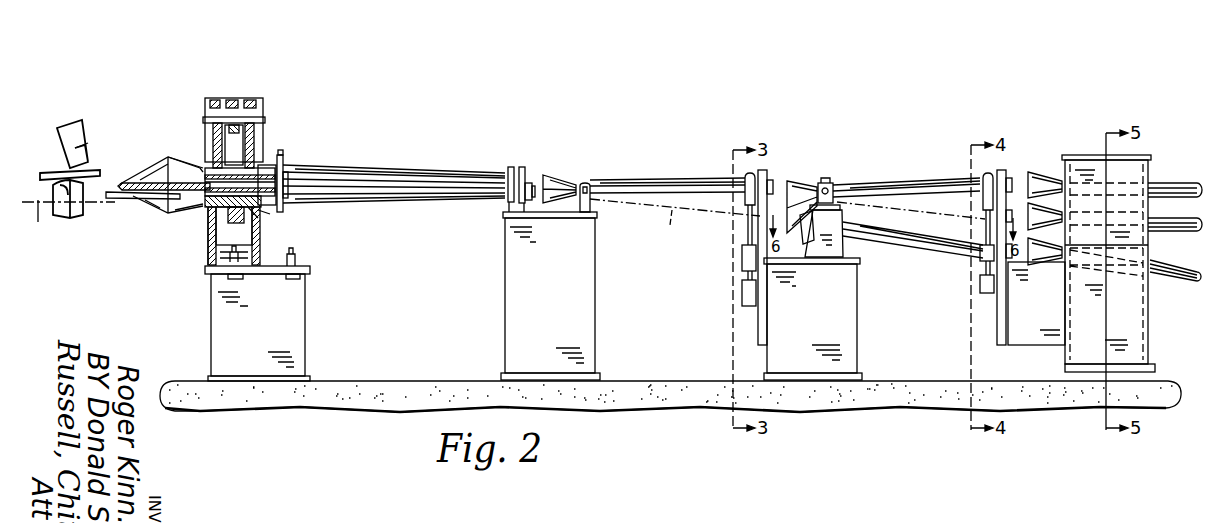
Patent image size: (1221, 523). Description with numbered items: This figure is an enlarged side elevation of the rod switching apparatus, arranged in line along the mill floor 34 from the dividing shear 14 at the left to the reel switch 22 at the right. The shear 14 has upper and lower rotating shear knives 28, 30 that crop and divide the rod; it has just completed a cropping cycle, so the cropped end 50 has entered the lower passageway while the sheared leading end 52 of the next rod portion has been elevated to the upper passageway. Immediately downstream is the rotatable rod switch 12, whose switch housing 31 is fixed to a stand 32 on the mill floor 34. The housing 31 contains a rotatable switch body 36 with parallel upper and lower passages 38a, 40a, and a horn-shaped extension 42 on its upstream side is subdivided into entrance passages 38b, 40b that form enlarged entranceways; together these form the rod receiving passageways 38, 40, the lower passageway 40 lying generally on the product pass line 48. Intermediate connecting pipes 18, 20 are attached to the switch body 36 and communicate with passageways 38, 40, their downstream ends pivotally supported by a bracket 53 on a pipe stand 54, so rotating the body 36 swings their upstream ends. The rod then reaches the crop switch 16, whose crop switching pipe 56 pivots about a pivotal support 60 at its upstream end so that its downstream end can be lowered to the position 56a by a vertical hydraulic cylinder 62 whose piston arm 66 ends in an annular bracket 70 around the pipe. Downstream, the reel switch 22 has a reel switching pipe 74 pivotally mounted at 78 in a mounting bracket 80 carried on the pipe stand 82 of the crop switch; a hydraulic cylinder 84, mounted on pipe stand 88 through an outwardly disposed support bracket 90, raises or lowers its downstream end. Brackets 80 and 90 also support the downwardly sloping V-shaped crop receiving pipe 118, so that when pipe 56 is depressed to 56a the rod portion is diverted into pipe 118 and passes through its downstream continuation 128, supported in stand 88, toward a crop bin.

The rotatable rod switch 12 is at (273, 103).
The dividing shear 14 is at (63, 110).
The crop switch 16 is at (789, 158).
The intermediate connecting pipe 18 is at (330, 168).
The intermediate connecting pipe 20 is at (330, 203).
The reel switch 22 is at (1043, 133).
The upper rotating shear knife 28 is at (85, 150).
The lower rotating shear knife 30 is at (80, 202).
The switch housing 31 is at (207, 262).
The stand 32 is at (305, 330).
The mill floor 34 is at (347, 387).
The rotatable switch body 36 is at (186, 218).
The rod receiving passageway 38 is at (195, 165).
The upper passage 38a is at (256, 168).
The entrance passage 38b is at (150, 177).
The rod receiving passageway 40 is at (178, 226).
The lower passage 40a is at (255, 213).
The entrance passage 40b is at (158, 210).
The horn-shaped extension 42 is at (170, 157).
The product pass line 48 is at (68, 223).
The cropped end 50 is at (135, 200).
The sheared leading end 52 is at (43, 173).
The bracket 53 is at (510, 167).
The pipe stand 54 is at (588, 293).
The crop switching pipe 56 is at (675, 178).
The lowered position 56a is at (672, 226).
The pivotal support 60 is at (587, 182).
The hydraulic cylinder 62 is at (742, 294).
The extensible piston arm 66 is at (742, 250).
The annular bracket 70 is at (745, 178).
The reel switching pipe 74 is at (908, 181).
The pivot point 78 is at (828, 183).
The mounting bracket 80 is at (826, 258).
The pipe stand 82 is at (858, 351).
The hydraulic cylinder 84 is at (980, 283).
The pipe stand 88 is at (1140, 338).
The support bracket 90 is at (1005, 330).
The crop receiving pipe 118 is at (886, 217).
The downstream continuation 128 is at (1178, 282).